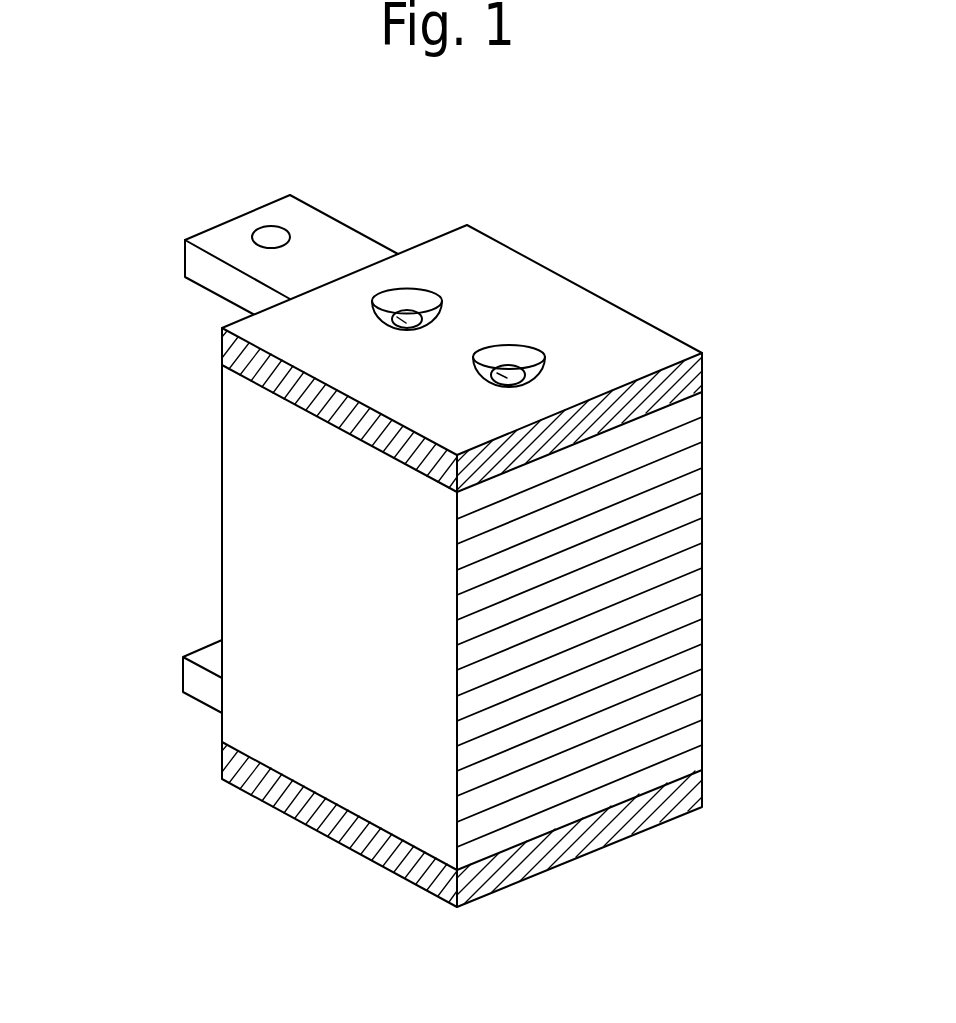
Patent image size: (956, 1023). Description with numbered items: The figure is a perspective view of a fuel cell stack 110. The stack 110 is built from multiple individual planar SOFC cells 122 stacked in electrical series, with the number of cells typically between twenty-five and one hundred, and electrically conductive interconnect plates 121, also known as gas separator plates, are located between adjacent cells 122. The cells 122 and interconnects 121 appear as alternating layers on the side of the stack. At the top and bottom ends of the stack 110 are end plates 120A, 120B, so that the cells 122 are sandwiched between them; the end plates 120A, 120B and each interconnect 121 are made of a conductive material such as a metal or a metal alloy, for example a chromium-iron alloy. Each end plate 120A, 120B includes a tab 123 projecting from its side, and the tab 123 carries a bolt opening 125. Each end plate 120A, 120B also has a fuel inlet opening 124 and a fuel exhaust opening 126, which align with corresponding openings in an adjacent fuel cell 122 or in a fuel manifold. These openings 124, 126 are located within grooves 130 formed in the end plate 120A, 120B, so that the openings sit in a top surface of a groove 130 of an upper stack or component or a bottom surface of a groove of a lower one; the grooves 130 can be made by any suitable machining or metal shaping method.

The fuel cell stack 110 is at (420, 150).
The end plate 120A is at (703, 783).
The end plate 120B is at (703, 367).
The interconnect plate 121 is at (703, 450).
The planar SOFC cell 122 is at (703, 478).
The tab 123 is at (184, 257).
The fuel inlet opening 124 is at (498, 372).
The bolt opening 125 is at (268, 236).
The fuel exhaust opening 126 is at (401, 317).
The groove 130 is at (425, 288).